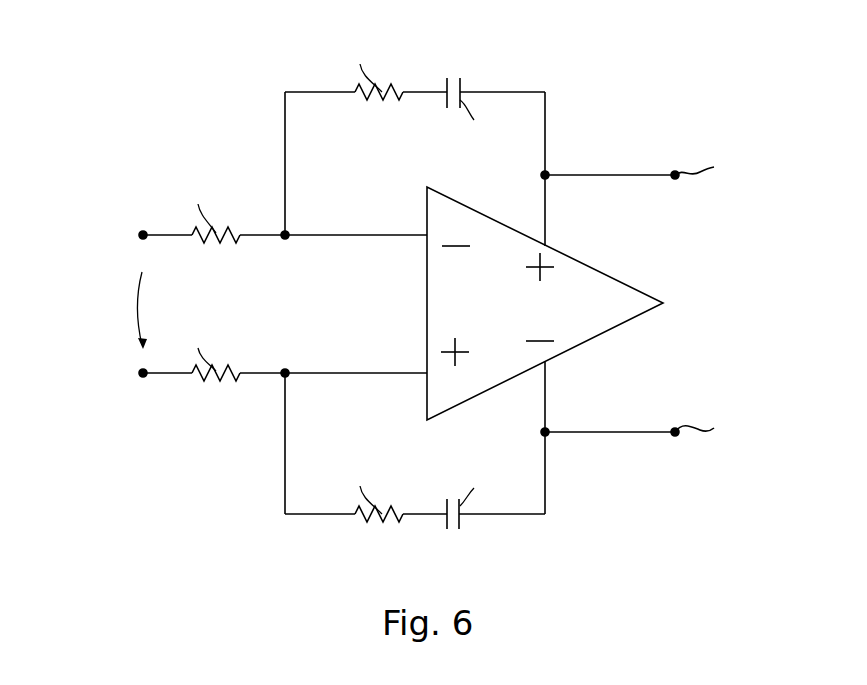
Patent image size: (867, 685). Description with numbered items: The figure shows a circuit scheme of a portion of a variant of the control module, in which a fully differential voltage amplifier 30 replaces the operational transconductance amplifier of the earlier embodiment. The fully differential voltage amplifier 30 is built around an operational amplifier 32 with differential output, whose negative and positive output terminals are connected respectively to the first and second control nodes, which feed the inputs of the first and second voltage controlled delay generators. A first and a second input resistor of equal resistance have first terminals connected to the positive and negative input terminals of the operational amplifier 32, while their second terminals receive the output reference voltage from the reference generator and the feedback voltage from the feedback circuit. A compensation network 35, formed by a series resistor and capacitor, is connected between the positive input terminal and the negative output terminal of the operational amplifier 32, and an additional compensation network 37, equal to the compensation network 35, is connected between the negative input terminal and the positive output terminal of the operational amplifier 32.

The fully differential voltage amplifier 30 is at (404, 288).
The operational amplifier 32 is at (640, 309).
The compensation network 35 is at (546, 527).
The additional compensation network 37 is at (574, 67).